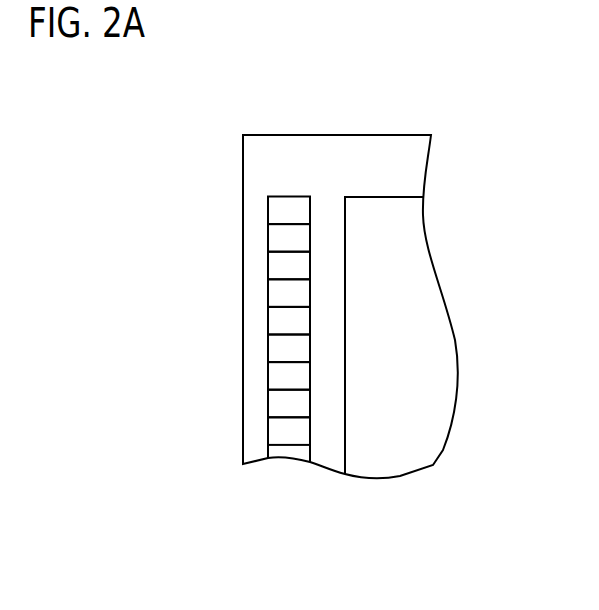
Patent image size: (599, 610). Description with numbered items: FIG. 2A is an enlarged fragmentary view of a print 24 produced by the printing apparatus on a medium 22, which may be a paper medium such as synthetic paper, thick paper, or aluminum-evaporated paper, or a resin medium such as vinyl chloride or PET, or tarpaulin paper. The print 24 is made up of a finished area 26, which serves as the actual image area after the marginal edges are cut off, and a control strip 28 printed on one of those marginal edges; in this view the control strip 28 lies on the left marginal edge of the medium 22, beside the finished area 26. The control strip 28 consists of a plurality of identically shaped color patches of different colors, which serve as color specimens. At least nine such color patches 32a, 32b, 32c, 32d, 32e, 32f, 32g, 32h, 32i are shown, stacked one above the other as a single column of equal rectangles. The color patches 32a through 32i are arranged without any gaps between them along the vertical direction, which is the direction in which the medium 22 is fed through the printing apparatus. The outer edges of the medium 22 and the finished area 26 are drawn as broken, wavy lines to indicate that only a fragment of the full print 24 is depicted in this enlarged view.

The print 24 is at (387, 107).
The medium 22 is at (407, 172).
The finished area 26 is at (407, 252).
The control strip 28 is at (180, 200).
The color patch 32a is at (268, 213).
The color patch 32b is at (268, 240).
The color patch 32c is at (268, 267).
The color patch 32d is at (268, 295).
The color patch 32e is at (268, 322).
The color patch 32f is at (268, 349).
The color patch 32g is at (268, 376).
The color patch 32h is at (268, 403).
The color patch 32i is at (268, 431).